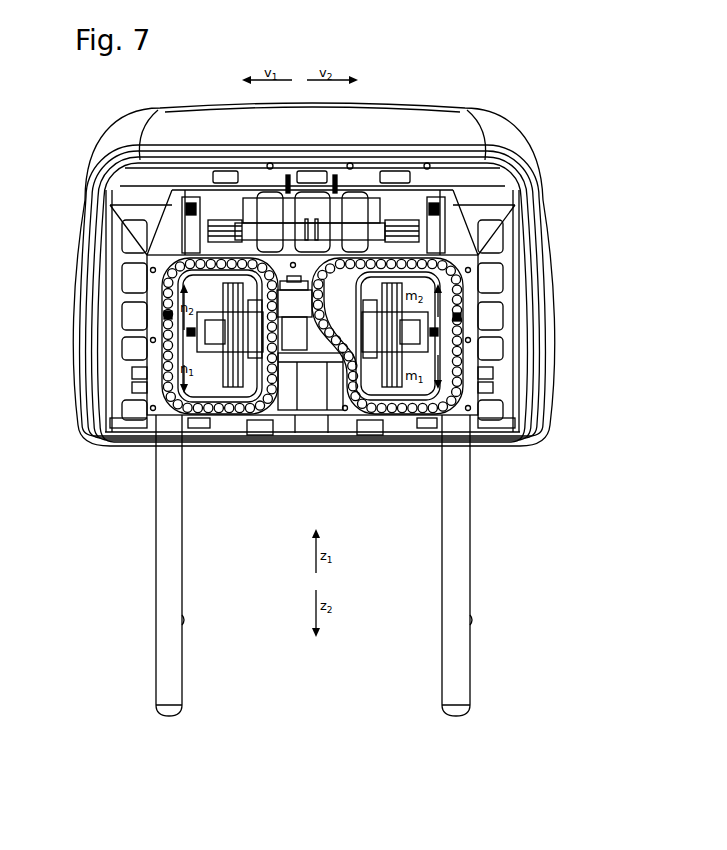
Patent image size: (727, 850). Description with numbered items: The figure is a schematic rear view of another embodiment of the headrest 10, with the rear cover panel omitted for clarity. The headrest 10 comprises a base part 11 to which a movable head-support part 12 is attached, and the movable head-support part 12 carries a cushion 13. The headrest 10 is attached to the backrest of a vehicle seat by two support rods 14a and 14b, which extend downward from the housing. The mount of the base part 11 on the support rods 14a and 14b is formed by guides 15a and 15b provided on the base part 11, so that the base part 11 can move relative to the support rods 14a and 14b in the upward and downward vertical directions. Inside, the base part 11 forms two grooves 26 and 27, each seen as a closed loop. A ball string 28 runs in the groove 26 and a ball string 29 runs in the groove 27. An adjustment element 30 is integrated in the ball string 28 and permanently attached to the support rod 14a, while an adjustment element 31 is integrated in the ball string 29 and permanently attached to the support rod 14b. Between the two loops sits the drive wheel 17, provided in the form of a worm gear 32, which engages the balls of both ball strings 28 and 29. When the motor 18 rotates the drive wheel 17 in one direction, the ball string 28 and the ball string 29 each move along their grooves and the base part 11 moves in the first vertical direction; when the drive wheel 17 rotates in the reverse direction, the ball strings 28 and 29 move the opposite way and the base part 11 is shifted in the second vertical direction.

The headrest 10 is at (491, 78).
The base part 11 is at (505, 184).
The movable head-support part 12 is at (120, 238).
The cushion 13 is at (314, 132).
The support rod 14a is at (457, 625).
The support rod 14b is at (172, 628).
The guide 15a is at (474, 283).
The guide 15b is at (112, 240).
The drive wheel 17 is at (290, 335).
The motor 18 is at (307, 387).
The groove 26 is at (402, 417).
The groove 27 is at (210, 417).
The ball string 28 is at (466, 332).
The ball string 29 is at (155, 393).
The adjustment element 30 is at (460, 317).
The adjustment element 31 is at (165, 315).
The worm gear 32 is at (338, 330).